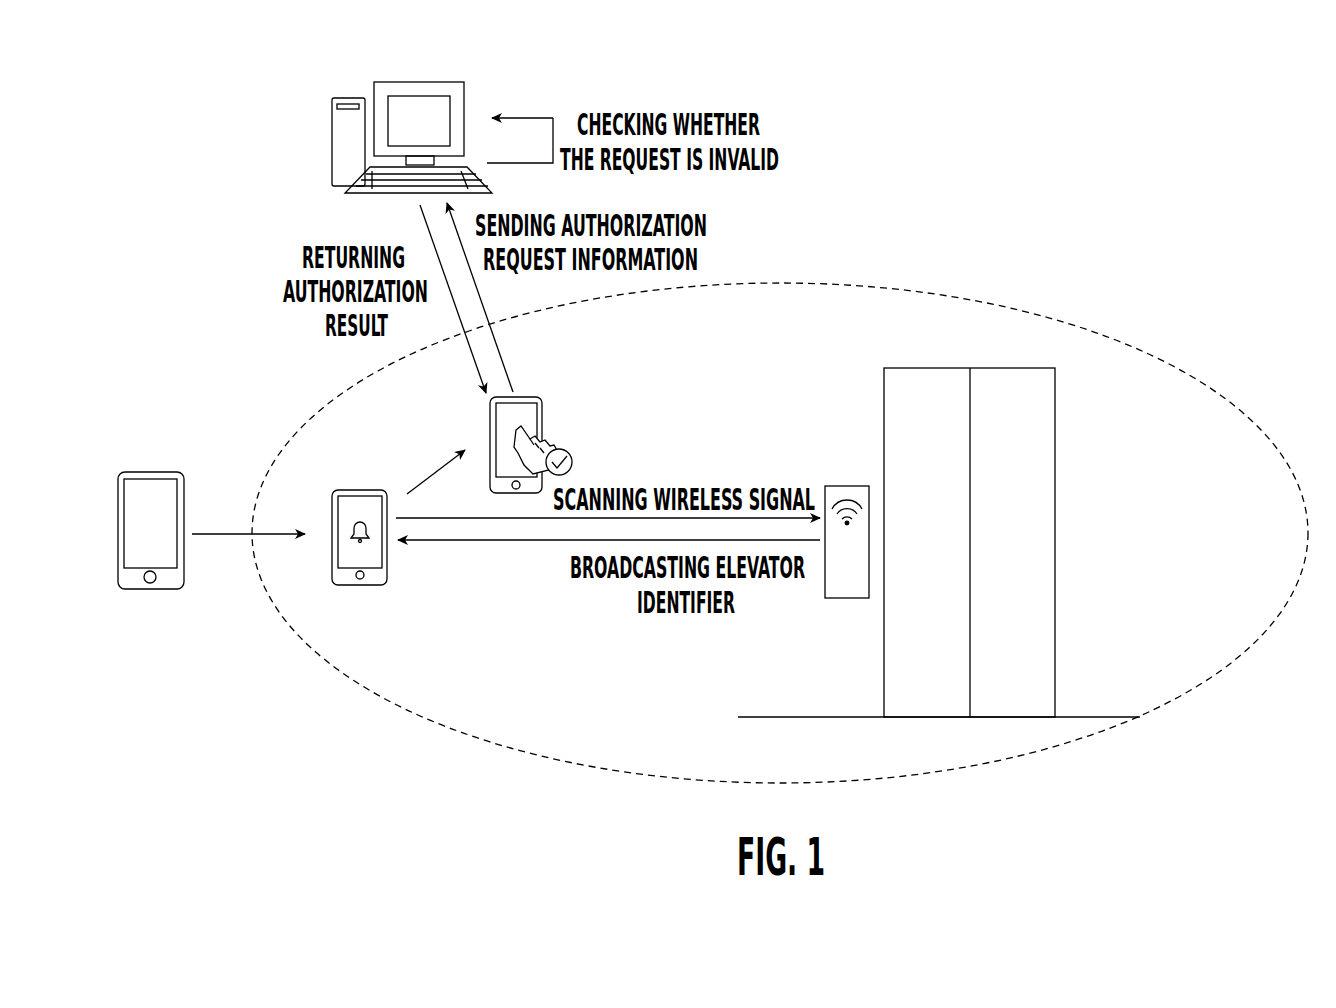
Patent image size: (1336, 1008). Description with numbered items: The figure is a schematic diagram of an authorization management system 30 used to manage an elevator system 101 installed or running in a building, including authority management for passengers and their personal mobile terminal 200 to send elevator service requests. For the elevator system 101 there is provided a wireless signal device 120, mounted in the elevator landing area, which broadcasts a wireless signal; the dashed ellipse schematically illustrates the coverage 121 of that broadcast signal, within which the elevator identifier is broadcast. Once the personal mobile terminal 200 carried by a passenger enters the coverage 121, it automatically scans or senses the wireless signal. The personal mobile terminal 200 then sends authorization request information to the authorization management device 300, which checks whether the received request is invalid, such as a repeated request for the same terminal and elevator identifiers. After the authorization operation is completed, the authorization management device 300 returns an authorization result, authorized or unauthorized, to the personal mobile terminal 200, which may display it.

The authorization management system 30 is at (860, 184).
The elevator system 101 is at (925, 367).
The wireless signal device 120 is at (850, 486).
The coverage 121 is at (890, 285).
The personal mobile terminal 200 is at (542, 405).
The authorization management device 300 is at (445, 82).